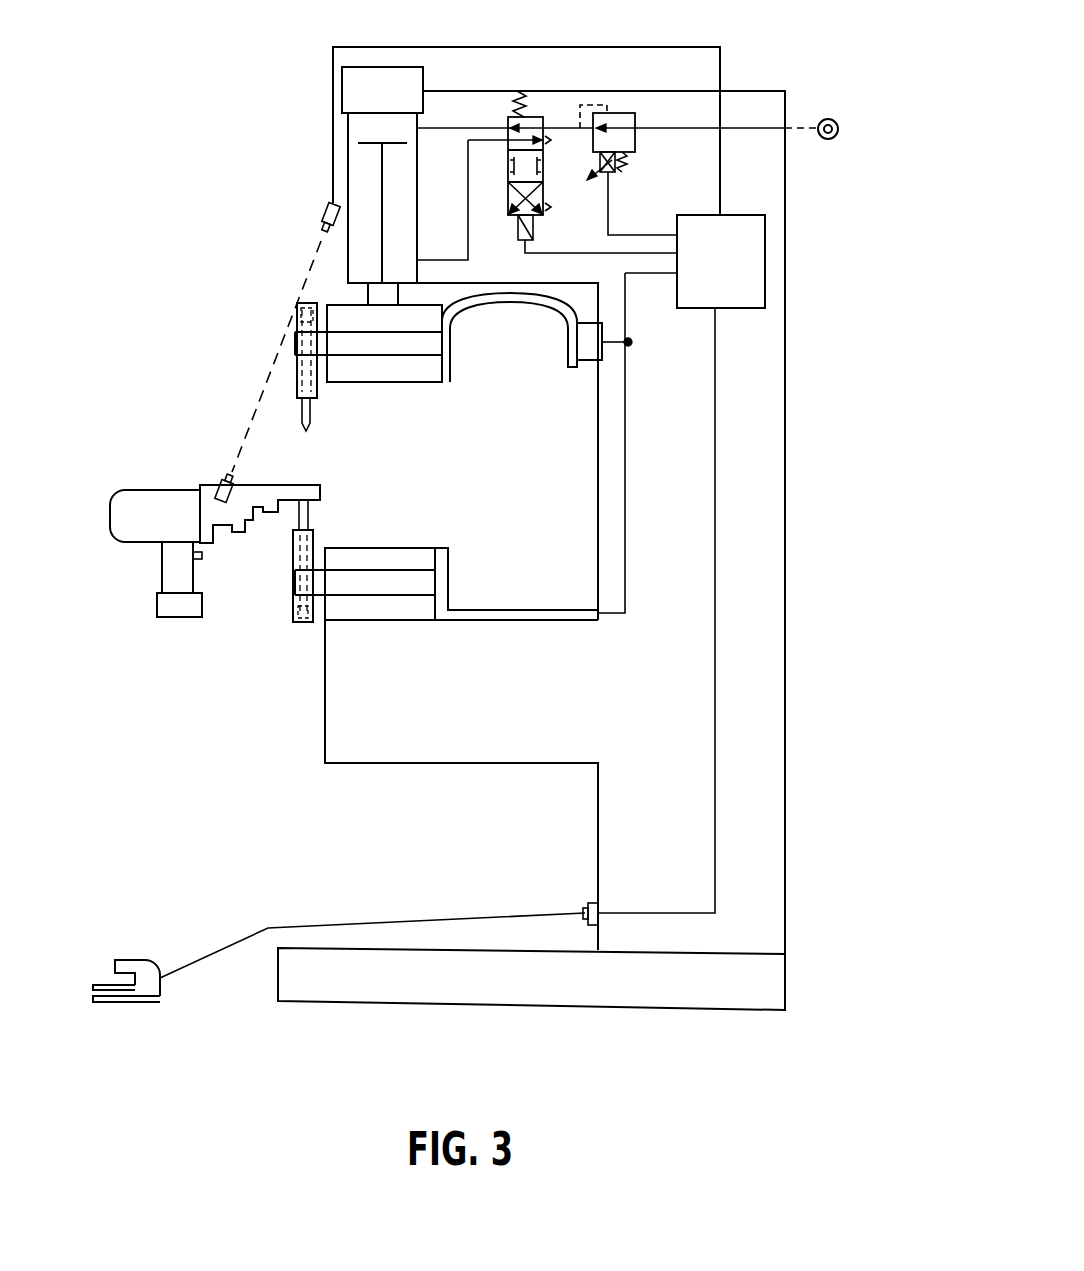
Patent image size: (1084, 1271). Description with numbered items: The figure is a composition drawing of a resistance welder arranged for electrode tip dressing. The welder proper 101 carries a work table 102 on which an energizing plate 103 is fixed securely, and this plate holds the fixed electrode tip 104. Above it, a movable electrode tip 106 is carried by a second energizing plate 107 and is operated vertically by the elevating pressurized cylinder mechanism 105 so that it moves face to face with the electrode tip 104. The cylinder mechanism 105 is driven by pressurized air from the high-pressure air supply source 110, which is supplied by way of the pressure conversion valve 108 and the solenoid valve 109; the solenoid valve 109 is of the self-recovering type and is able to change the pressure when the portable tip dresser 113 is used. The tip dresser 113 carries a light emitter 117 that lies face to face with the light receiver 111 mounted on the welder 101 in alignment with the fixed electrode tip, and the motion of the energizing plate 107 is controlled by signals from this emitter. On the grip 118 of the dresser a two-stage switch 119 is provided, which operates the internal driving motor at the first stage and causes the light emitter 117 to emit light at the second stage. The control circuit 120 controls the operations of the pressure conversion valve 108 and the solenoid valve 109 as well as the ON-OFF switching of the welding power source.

The welder proper 101 is at (773, 613).
The work table 102 is at (407, 748).
The energizing plate 103 is at (418, 558).
The electrode tip 104 is at (318, 536).
The elevating pressurized cylinder mechanism 105 is at (334, 133).
The movable electrode tip 106 is at (316, 402).
The energizing plate 107 is at (427, 372).
The pressure conversion valve 108 is at (635, 115).
The solenoid valve 109 is at (545, 190).
The high-pressure air supply source 110 is at (828, 118).
The light receiver 111 is at (318, 216).
The portable tip dresser 113 is at (192, 511).
The light emitter 117 is at (222, 475).
The grip 118 is at (157, 581).
The two-stage switch 119 is at (203, 556).
The control circuit 120 is at (766, 250).